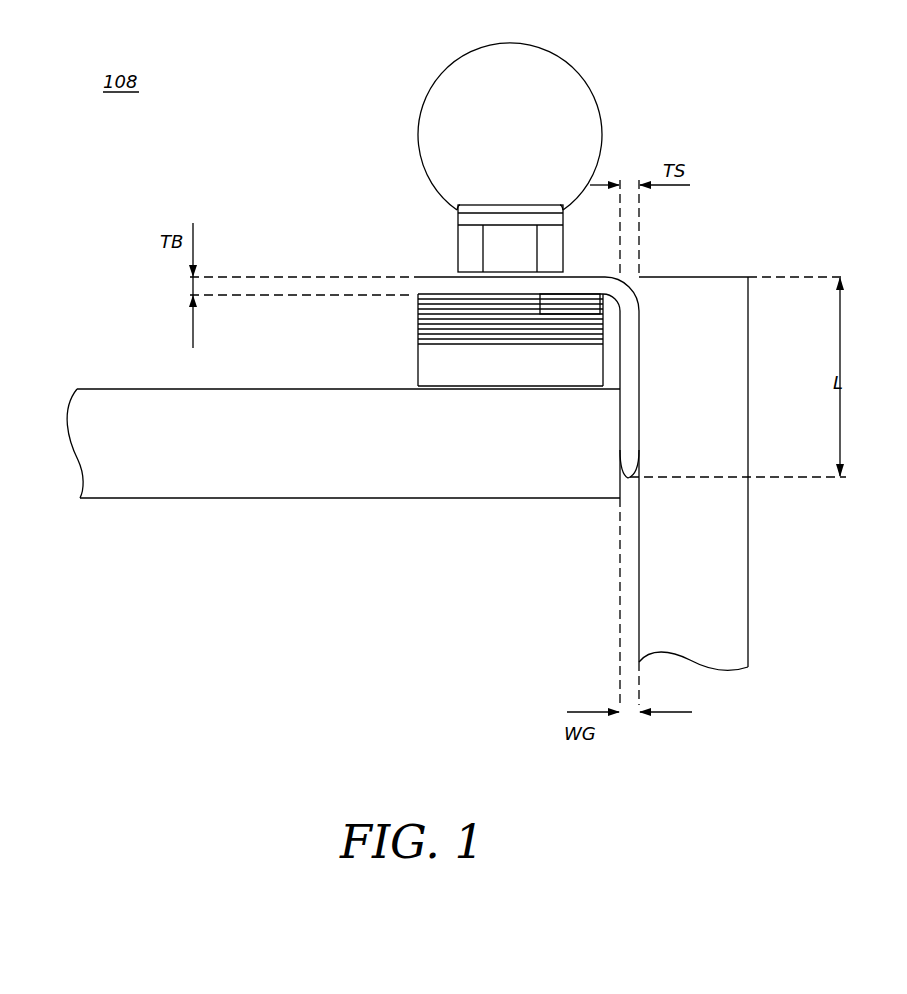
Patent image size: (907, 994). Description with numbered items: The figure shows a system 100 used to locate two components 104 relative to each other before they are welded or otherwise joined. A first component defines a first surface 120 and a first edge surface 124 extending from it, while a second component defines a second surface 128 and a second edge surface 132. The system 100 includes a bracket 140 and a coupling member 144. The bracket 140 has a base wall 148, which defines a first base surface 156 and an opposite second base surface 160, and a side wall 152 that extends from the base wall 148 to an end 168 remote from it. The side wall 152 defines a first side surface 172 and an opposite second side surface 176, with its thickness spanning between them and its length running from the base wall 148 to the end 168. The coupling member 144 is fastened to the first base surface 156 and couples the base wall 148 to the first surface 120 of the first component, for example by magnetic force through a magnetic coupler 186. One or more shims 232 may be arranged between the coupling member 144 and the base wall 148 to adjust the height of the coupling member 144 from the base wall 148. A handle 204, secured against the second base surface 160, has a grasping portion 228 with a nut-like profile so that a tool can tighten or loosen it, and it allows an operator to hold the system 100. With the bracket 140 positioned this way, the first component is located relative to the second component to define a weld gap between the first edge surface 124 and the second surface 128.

The system 100 is at (580, 71).
The handle 204 is at (588, 85).
The grasping portion 228 is at (565, 247).
The first base surface 156 is at (570, 303).
The components 104 is at (115, 389).
The first surface 120 is at (203, 389).
The second edge surface 132 is at (720, 277).
The side wall 152 is at (640, 370).
The second surface 128 is at (639, 603).
The bracket 140 is at (404, 287).
The base wall 148 is at (433, 277).
The second base surface 160 is at (447, 277).
The second side surface 176 is at (640, 413).
The end 168 is at (640, 480).
The first side surface 172 is at (620, 422).
The first edge surface 124 is at (629, 480).
The coupling member 144 is at (418, 348).
The shims 232 is at (418, 300).
The magnetic coupler 186 is at (418, 363).